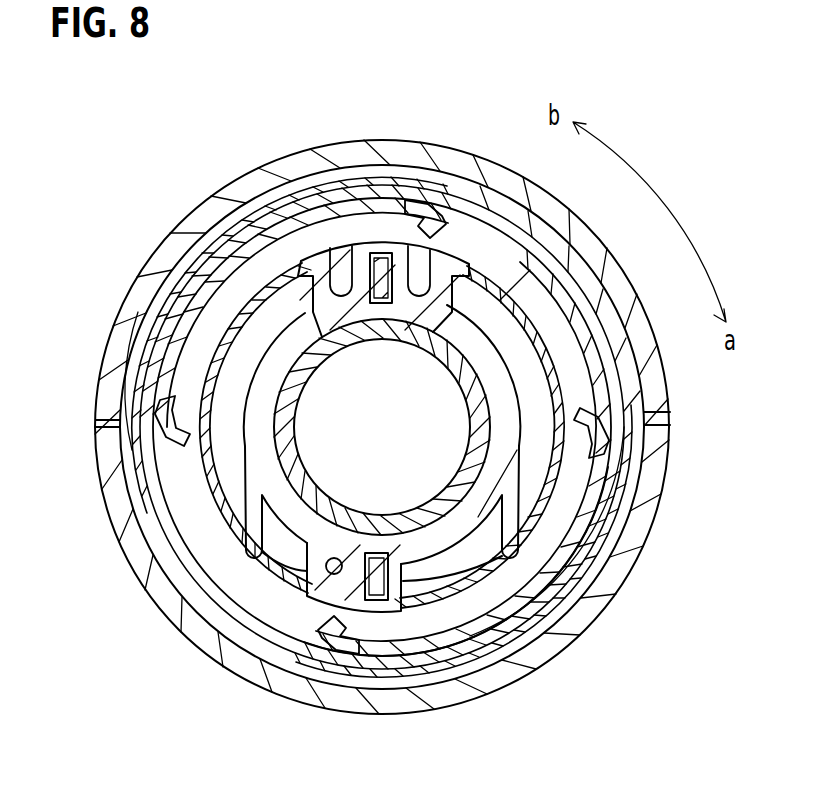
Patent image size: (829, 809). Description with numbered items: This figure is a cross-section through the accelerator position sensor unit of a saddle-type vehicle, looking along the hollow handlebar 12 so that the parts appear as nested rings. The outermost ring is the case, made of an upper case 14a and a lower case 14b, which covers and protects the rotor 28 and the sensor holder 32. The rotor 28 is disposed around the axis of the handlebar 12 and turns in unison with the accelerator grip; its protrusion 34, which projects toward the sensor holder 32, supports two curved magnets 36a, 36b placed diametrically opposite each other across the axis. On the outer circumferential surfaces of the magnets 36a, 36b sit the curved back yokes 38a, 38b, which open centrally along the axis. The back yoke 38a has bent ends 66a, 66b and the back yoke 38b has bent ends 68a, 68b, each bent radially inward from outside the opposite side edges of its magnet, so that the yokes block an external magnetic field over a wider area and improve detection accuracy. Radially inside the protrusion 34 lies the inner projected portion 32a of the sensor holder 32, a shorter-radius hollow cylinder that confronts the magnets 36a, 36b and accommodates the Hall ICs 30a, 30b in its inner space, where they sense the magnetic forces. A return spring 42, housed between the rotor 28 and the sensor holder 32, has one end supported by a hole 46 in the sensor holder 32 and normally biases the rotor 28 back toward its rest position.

The handlebar 12 is at (283, 490).
The upper case 14a is at (135, 320).
The lower case 14b is at (118, 468).
The rotor 28 is at (159, 556).
The Hall IC 30a is at (382, 253).
The Hall IC 30b is at (376, 600).
The sensor holder 32 is at (262, 478).
The inner projected portion 32a is at (245, 290).
The protrusion 34 is at (150, 328).
The magnet 36a is at (340, 215).
The magnet 36b is at (538, 618).
The back yoke 38a is at (325, 207).
The back yoke 38b is at (438, 640).
The return spring 42 is at (465, 652).
The hole 46 is at (342, 558).
The bent end 66a is at (432, 220).
The bent end 66b is at (163, 428).
The bent end 68a is at (327, 640).
The bent end 68b is at (606, 434).